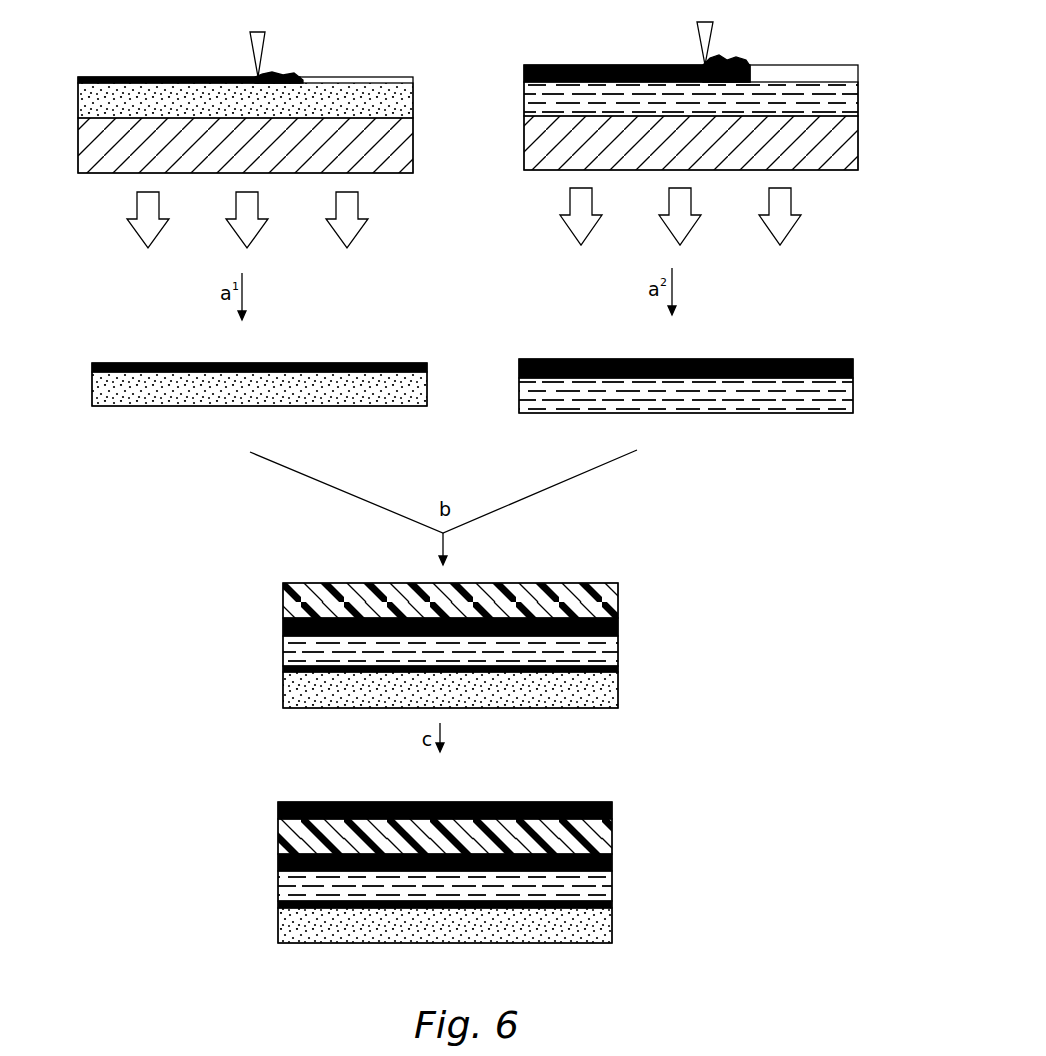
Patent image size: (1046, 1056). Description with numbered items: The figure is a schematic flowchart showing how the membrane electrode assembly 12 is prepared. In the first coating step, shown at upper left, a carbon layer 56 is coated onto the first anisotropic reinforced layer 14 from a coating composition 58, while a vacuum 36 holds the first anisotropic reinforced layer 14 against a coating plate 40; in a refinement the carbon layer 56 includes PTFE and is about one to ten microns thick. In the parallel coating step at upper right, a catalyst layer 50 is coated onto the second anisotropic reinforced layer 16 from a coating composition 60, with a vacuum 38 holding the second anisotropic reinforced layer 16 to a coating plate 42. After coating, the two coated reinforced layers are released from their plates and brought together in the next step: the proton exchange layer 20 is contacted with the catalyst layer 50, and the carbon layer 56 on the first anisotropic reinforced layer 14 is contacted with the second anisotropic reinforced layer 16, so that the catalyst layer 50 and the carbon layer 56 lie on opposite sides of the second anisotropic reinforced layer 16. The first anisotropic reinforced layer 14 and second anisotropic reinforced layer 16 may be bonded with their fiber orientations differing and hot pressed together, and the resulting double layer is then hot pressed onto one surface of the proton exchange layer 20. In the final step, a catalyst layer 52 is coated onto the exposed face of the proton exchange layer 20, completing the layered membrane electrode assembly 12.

The membrane electrode assembly 12 is at (231, 562).
The first anisotropic reinforced layer 14 is at (78, 100).
The second anisotropic reinforced layer 16 is at (524, 100).
The proton exchange layer 20 is at (612, 837).
The vacuum 36 is at (106, 217).
The vacuum 38 is at (538, 217).
The coating plate 40 is at (78, 150).
The coating plate 42 is at (524, 144).
The catalyst layer 50 is at (813, 360).
The catalyst layer 52 is at (278, 803).
The carbon layer 56 is at (146, 362).
The coating composition 58 is at (282, 73).
The coating composition 60 is at (738, 58).